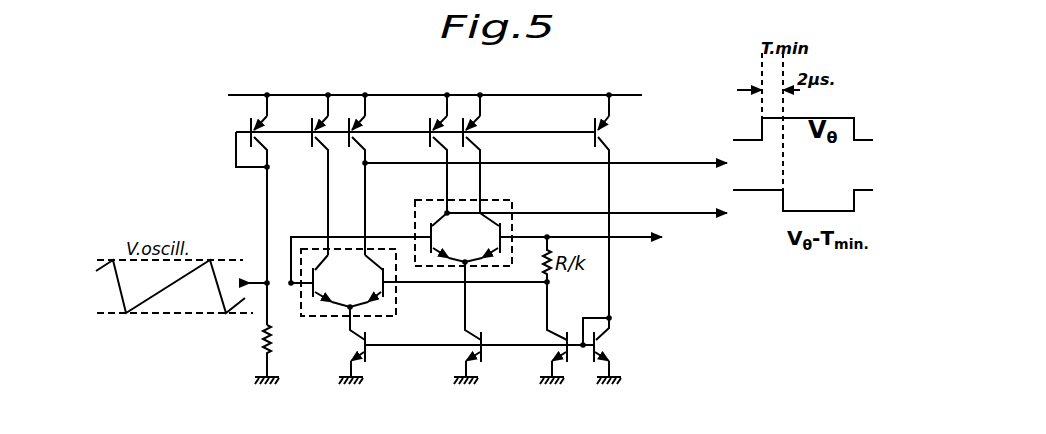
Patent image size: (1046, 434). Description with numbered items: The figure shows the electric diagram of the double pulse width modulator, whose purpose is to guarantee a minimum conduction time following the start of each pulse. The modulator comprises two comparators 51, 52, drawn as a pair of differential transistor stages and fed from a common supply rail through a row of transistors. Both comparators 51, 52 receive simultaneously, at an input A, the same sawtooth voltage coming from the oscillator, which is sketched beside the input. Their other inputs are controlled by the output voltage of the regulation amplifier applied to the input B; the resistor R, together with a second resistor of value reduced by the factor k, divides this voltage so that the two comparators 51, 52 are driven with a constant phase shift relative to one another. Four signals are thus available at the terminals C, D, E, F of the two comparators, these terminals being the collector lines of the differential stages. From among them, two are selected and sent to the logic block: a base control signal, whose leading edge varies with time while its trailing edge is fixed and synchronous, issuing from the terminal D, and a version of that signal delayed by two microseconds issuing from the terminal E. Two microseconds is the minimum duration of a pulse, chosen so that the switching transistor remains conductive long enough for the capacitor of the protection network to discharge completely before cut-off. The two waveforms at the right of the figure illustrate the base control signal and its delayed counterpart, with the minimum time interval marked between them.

The comparator 51 is at (361, 296).
The comparator 52 is at (479, 249).
The input A is at (253, 273).
The input B is at (590, 237).
The terminal C is at (322, 196).
The terminal D is at (368, 196).
The terminal E is at (440, 175).
The terminal F is at (482, 175).
The resistor R is at (276, 351).